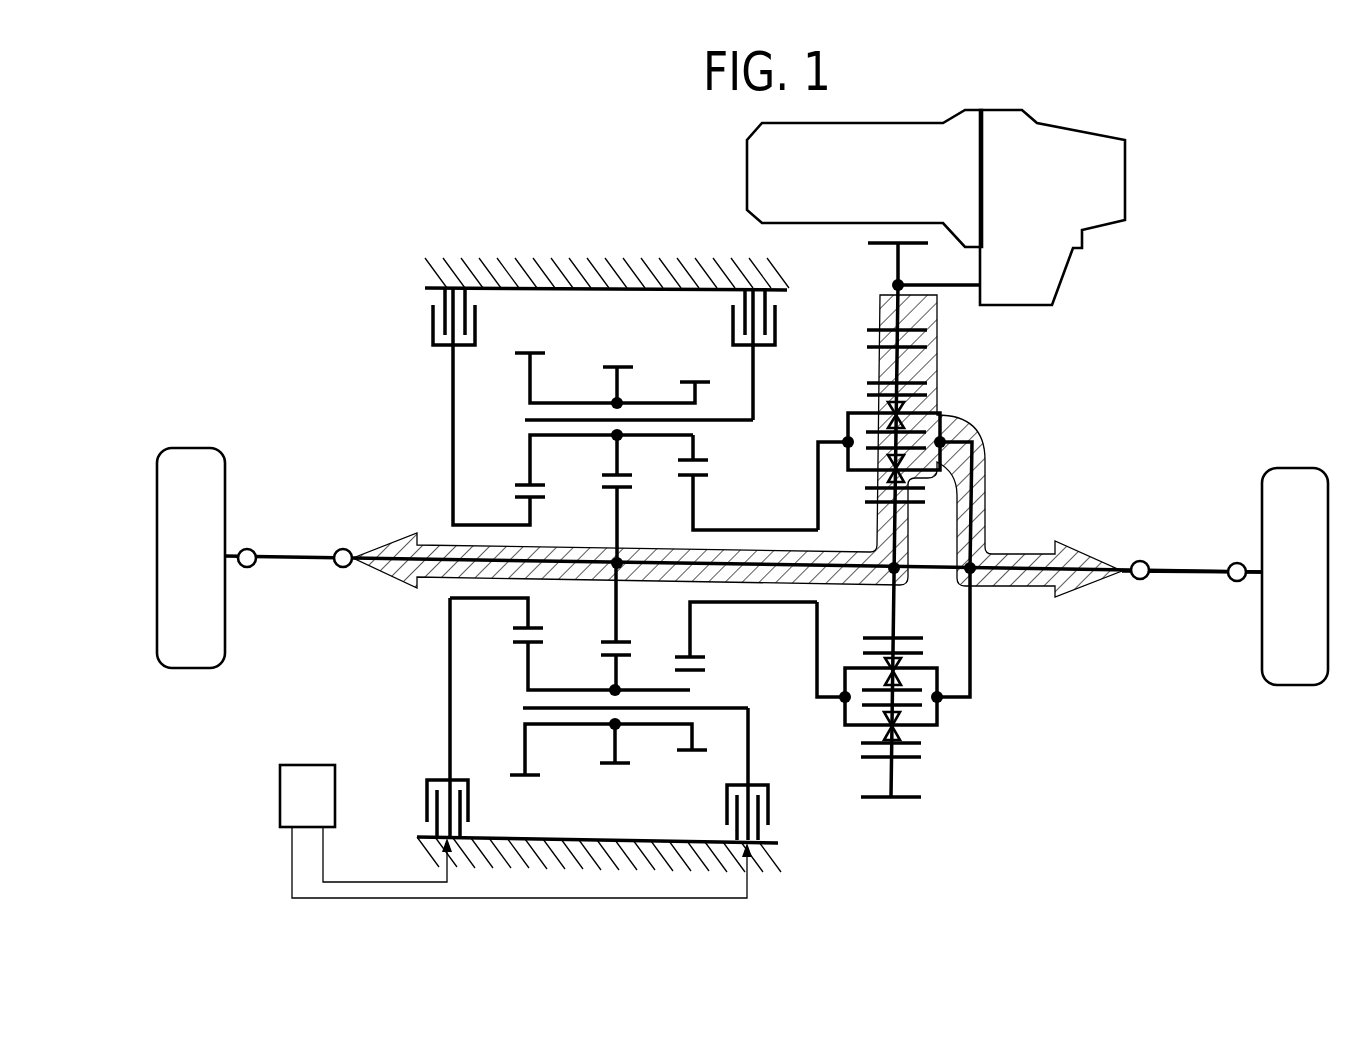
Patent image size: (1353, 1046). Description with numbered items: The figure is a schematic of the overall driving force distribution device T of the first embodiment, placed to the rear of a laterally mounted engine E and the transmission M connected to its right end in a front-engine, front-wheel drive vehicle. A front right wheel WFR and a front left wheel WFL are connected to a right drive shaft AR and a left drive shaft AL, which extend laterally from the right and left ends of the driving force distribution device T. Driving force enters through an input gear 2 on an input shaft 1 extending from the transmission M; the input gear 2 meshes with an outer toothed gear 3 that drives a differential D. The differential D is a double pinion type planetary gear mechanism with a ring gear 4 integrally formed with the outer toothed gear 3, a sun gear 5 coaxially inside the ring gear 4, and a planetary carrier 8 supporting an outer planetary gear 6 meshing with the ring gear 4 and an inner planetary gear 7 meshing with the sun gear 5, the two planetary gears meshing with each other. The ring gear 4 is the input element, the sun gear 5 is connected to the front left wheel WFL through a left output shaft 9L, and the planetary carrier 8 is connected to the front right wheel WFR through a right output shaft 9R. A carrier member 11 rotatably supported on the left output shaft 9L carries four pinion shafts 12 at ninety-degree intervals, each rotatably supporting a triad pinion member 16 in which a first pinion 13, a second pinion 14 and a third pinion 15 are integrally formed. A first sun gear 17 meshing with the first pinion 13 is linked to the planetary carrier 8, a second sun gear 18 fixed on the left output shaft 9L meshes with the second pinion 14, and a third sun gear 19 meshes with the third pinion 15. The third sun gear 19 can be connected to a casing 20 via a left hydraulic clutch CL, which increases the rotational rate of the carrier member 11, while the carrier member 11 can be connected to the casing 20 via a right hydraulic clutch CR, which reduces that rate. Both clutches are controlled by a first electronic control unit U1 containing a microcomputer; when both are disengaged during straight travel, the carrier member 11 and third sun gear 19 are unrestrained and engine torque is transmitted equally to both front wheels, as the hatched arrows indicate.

The input shaft 1 is at (922, 285).
The input gear 2 is at (868, 243).
The outer toothed gear 3 is at (868, 347).
The ring gear 4 is at (868, 383).
The sun gear 5 is at (912, 503).
The outer planetary gear 6 is at (868, 395).
The inner planetary gear 7 is at (866, 488).
The planetary carrier 8 is at (972, 445).
The left output shaft 9L is at (445, 547).
The right output shaft 9R is at (1082, 546).
The carrier member 11 is at (725, 700).
The pinion shaft 12 is at (535, 418).
The first pinion 13 is at (688, 382).
The second pinion 14 is at (614, 366).
The third pinion 15 is at (540, 352).
The triad pinion member 16 is at (575, 398).
The first sun gear 17 is at (705, 478).
The second sun gear 18 is at (630, 488).
The third sun gear 19 is at (540, 499).
The casing 20 is at (605, 280).
The driving force distribution device T is at (541, 243).
The left hydraulic clutch CL is at (430, 325).
The right hydraulic clutch CR is at (782, 318).
The differential D is at (965, 418).
The engine E is at (859, 185).
The transmission M is at (1058, 195).
The front left wheel WFL is at (190, 447).
The front right wheel WFR is at (1292, 468).
The left drive shaft AL is at (290, 556).
The right drive shaft AR is at (1183, 570).
The first electronic control unit U1 is at (326, 816).